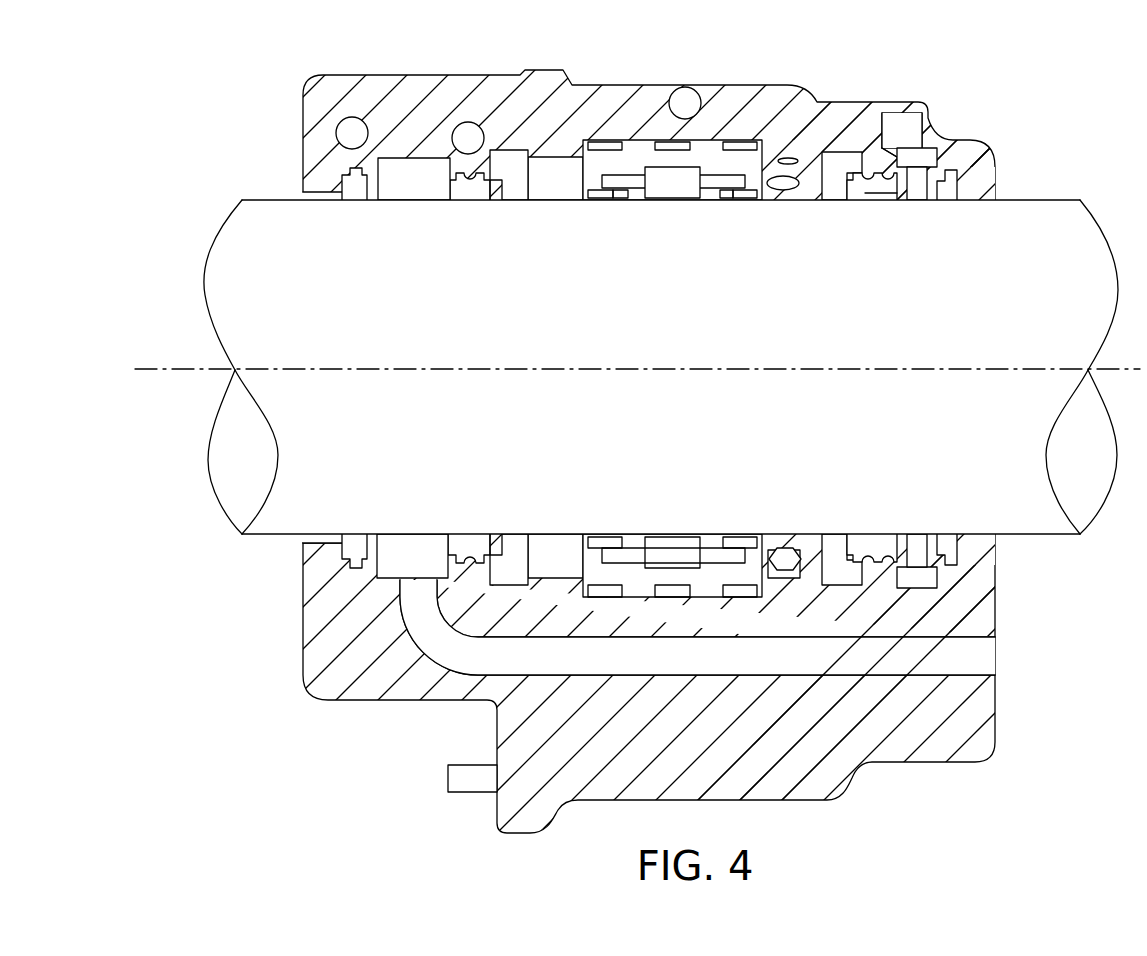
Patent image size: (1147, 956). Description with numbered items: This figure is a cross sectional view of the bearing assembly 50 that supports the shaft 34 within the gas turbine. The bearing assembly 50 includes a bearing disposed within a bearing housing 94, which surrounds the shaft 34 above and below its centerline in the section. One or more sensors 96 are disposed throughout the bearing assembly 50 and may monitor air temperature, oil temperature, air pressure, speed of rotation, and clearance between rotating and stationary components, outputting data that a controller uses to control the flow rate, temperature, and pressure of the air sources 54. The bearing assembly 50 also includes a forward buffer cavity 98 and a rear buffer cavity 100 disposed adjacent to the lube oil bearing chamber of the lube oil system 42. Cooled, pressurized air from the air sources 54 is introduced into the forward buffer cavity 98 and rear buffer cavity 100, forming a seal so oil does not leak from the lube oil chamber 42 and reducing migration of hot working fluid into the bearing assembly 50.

The shaft 34 is at (660, 312).
The lube oil system 42 is at (573, 424).
The bearing assembly 50 is at (573, 451).
The air sources 54 is at (412, 175).
The bearing housing 94 is at (540, 90).
The sensors 96 is at (340, 121).
The forward buffer cavity 98 is at (407, 555).
The rear buffer cavity 100 is at (922, 577).